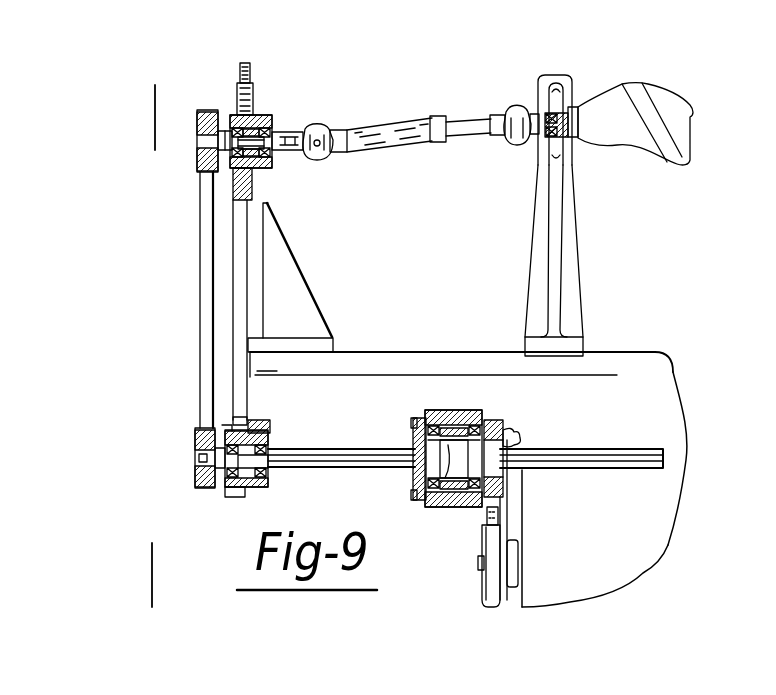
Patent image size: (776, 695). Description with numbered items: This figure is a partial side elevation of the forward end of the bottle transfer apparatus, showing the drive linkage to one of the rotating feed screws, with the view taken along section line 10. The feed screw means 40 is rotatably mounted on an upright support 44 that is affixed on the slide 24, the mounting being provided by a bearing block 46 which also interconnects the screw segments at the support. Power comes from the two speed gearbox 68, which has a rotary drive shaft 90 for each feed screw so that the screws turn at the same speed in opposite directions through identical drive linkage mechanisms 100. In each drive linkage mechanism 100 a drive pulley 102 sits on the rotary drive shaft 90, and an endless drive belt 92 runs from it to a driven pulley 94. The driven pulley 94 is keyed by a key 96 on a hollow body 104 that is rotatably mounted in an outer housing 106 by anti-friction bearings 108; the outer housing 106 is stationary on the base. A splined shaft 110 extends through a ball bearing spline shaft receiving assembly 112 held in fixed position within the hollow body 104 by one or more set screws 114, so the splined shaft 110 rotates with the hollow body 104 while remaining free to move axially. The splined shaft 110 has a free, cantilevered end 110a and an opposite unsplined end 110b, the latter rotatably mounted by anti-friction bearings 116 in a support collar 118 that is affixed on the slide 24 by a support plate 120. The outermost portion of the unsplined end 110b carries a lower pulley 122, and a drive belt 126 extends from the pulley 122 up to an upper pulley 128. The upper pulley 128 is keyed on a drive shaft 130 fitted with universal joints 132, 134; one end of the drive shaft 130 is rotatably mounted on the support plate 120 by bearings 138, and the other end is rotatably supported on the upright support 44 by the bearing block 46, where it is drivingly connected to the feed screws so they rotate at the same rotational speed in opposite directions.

The section line 10 is at (140, 582).
The slide 24 is at (388, 357).
The feed screw means 40 is at (682, 118).
The upright support 44 is at (567, 250).
The bearing block 46 is at (567, 95).
The two speed gearbox 68 is at (650, 580).
The rotary drive shaft 90 is at (500, 567).
The endless drive belt 92 is at (495, 509).
The driven pulley 94 is at (505, 428).
The key 96 is at (515, 440).
The drive linkage mechanism 100 is at (190, 310).
The drive pulley 102 is at (482, 545).
The hollow body 104 is at (415, 485).
The outer housing 106 is at (436, 408).
The anti-friction bearings 108 is at (477, 408).
The splined shaft 110 is at (557, 468).
The free cantilevered end 110a is at (674, 412).
The unsplined end 110b is at (262, 485).
The ball bearing spline shaft receiving assembly 112 is at (507, 492).
The set screw 114 is at (417, 471).
The anti-friction bearings 116 is at (270, 438).
The support collar 118 is at (237, 493).
The support plate 120 is at (243, 288).
The pulley 122 is at (195, 433).
The drive belt 126 is at (203, 362).
The upper pulley 128 is at (197, 160).
The drive shaft 130 is at (294, 120).
The universal joint 132 is at (320, 122).
The universal joint 134 is at (513, 140).
The bearings 138 is at (272, 166).